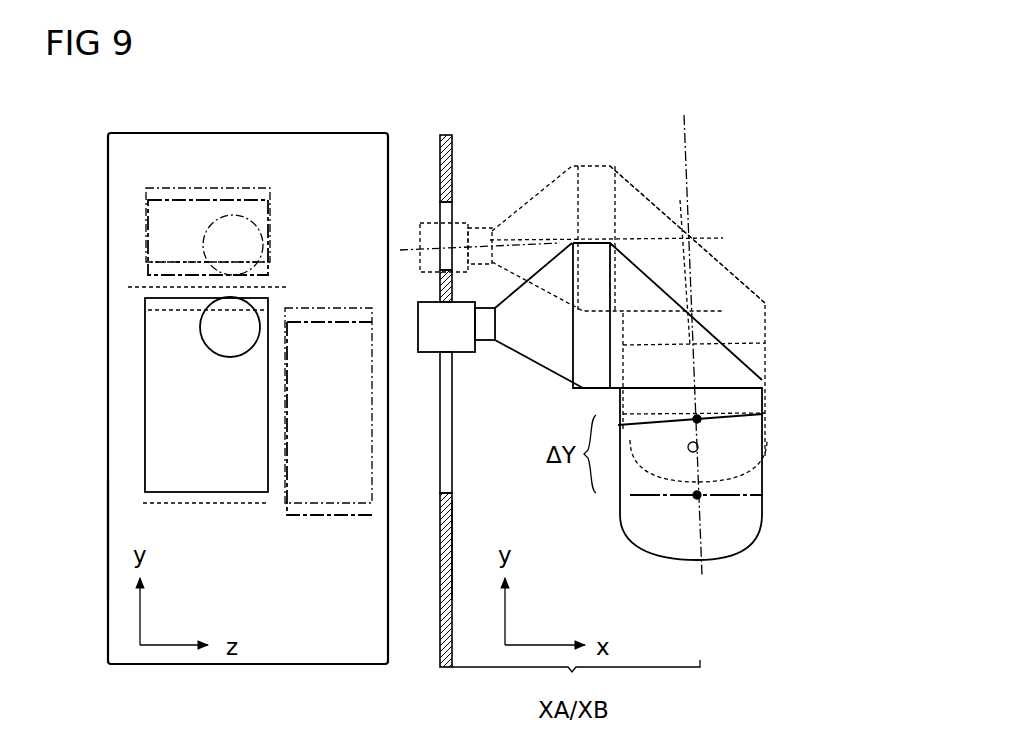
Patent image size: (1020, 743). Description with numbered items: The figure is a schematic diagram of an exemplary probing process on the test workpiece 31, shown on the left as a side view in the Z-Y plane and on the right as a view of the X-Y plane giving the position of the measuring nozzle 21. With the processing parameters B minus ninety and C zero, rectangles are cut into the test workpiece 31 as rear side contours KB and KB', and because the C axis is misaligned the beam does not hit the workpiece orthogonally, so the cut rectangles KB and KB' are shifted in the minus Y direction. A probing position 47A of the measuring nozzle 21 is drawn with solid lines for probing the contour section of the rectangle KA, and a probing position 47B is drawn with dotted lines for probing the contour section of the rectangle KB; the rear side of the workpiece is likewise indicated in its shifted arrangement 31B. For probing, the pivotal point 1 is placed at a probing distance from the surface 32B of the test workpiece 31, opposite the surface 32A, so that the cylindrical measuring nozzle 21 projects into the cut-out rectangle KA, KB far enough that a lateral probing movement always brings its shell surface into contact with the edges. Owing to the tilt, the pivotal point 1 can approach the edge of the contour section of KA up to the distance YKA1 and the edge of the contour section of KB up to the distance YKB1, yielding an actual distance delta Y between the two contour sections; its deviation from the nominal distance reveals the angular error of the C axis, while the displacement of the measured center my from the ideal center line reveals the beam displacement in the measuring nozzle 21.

The test workpiece 31 is at (107, 182).
The holding plate position B 31B is at (783, 147).
The probing position 47A is at (186, 349).
The probing position 47B is at (282, 224).
The measuring nozzle 21 is at (263, 247).
The guide rail A 32A is at (118, 502).
The surface 32B is at (453, 530).
The pivotal point 1 is at (703, 421).
The cut out rectangle KA is at (210, 470).
The rear side contour KB is at (295, 160).
The rear side contour KB' is at (328, 442).
The distance YKA1 is at (758, 500).
The distance YKB1 is at (758, 408).
The measured center my is at (684, 456).